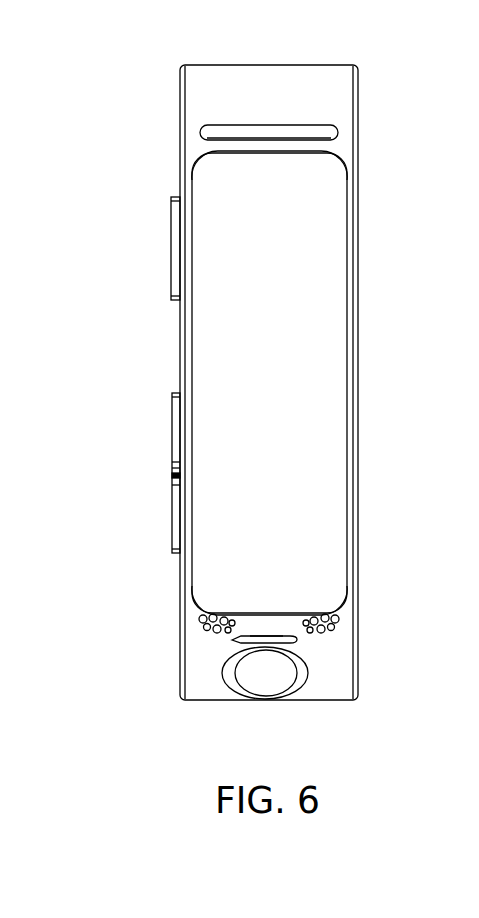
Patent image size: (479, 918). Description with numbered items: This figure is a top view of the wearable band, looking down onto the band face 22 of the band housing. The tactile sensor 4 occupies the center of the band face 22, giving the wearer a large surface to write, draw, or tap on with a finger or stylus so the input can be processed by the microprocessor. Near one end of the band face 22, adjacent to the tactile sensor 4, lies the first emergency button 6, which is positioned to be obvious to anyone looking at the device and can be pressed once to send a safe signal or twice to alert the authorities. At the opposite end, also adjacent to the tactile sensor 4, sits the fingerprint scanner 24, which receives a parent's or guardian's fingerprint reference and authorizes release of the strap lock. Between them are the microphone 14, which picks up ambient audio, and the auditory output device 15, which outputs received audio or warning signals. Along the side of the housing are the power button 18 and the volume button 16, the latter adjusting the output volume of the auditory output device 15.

The tactile sensor 4 is at (330, 325).
The first emergency button 6 is at (233, 135).
The microphone 14 is at (237, 641).
The auditory output device 15 is at (340, 622).
The volume button 16 is at (172, 450).
The power button 18 is at (172, 252).
The band face 22 is at (347, 137).
The fingerprint scanner 24 is at (282, 675).